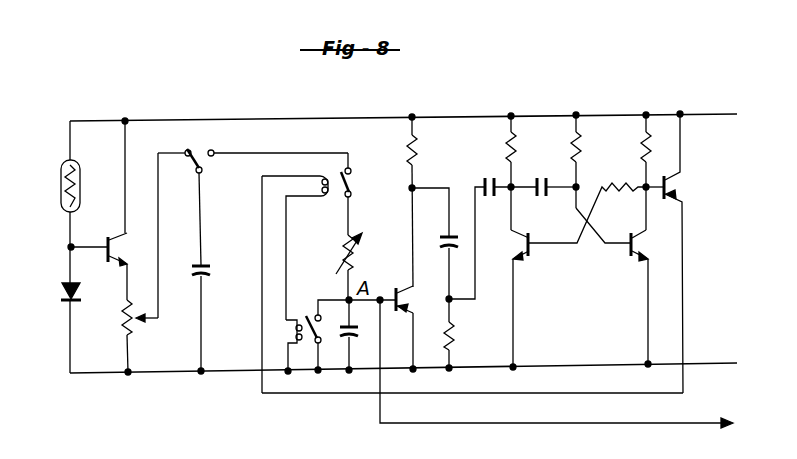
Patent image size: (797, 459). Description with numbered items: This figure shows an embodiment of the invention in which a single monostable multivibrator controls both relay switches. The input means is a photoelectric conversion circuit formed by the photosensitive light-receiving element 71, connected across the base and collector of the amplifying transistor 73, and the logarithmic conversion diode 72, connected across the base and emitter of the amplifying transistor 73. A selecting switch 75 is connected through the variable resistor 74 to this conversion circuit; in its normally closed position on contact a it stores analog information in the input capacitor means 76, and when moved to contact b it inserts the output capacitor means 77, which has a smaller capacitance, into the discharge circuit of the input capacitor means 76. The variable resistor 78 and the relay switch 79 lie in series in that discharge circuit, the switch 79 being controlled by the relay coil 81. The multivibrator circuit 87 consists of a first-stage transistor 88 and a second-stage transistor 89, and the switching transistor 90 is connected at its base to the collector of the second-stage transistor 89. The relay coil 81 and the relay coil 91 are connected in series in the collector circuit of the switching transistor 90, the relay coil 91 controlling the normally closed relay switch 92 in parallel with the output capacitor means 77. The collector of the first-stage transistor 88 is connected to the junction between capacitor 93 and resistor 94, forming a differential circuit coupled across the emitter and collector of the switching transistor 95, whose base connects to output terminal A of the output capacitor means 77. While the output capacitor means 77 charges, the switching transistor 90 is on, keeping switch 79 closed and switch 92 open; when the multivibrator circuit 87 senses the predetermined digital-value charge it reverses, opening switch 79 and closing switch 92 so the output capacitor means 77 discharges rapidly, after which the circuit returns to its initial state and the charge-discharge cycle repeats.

The photosensitive light-receiving element 71 is at (62, 190).
The logarithmic conversion diode 72 is at (70, 303).
The amplifying transistor 73 is at (121, 265).
The variable resistor 74 is at (120, 328).
The selecting switch 75 is at (200, 156).
The input capacitor means 76 is at (206, 276).
The output capacitor means 77 is at (353, 338).
The variable resistor 78 is at (352, 262).
The relay switch 79 is at (352, 184).
The relay coil 81 is at (322, 192).
The monostable multivibrator circuit 87 is at (604, 128).
The first-stage transistor 88 is at (522, 243).
The second-stage transistor 89 is at (630, 260).
The switching transistor 90 is at (672, 186).
The relay coil 91 is at (295, 329).
The relay switch 92 is at (316, 316).
The capacitor 93 is at (444, 240).
The resistor 94 is at (453, 331).
The switching transistor 95 is at (407, 300).